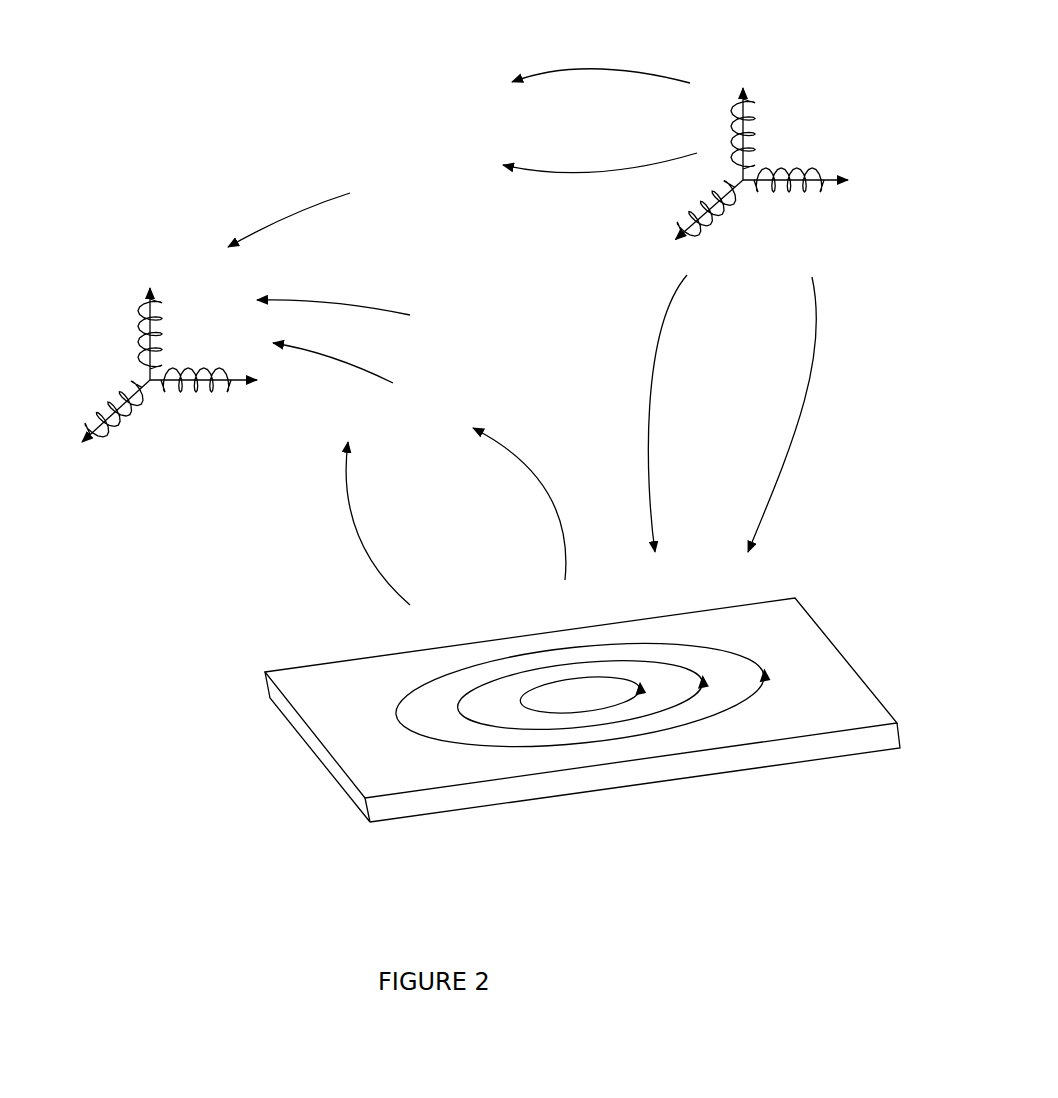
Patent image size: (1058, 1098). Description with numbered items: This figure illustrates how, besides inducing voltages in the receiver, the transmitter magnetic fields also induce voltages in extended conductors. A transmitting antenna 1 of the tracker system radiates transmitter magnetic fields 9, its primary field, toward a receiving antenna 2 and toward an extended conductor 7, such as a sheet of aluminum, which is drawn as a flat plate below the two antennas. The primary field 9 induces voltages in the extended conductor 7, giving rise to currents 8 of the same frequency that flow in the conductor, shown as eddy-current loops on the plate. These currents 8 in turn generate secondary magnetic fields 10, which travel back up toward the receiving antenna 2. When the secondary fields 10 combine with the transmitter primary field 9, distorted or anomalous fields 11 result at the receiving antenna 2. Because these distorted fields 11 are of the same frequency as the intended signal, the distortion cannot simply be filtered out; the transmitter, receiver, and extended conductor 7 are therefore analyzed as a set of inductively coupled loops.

The transmitting antenna 1 is at (812, 110).
The receiving antenna 2 is at (102, 343).
The extended conductor 7 is at (285, 742).
The currents 8 is at (749, 715).
The transmitter magnetic fields 9 is at (659, 310).
The secondary magnetic fields 10 is at (456, 516).
The distorted or anomalous fields 11 is at (335, 288).